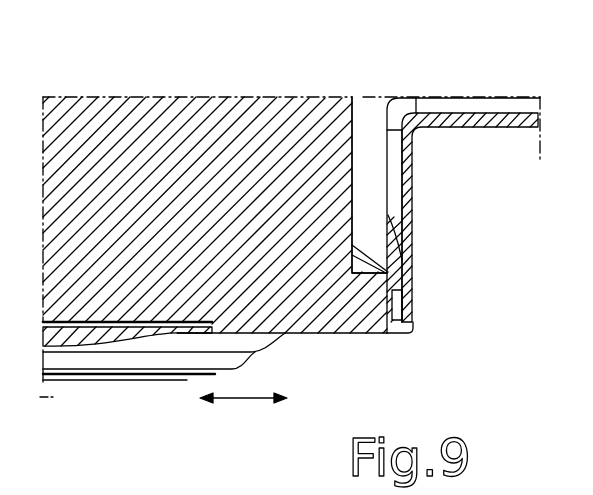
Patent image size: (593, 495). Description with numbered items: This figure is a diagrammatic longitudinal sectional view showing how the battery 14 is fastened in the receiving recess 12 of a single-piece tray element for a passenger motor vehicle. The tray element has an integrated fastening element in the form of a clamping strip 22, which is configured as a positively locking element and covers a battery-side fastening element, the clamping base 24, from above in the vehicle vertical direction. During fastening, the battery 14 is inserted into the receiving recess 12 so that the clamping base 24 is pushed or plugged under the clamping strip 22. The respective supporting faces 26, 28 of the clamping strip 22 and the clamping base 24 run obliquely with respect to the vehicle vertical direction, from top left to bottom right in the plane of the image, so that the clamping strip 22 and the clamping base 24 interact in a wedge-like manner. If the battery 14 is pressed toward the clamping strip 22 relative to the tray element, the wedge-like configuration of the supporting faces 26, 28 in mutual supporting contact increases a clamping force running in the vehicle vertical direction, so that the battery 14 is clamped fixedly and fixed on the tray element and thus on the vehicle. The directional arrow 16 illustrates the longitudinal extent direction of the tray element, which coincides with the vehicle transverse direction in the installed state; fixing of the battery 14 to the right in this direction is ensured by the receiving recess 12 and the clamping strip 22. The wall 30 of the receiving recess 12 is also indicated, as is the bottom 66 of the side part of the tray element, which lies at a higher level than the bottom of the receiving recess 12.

The receiving recess 12 is at (370, 108).
The battery 14 is at (213, 106).
The directional arrow 16 is at (245, 398).
The clamping strip 22 is at (404, 247).
The clamping base 24 is at (320, 310).
The supporting face 26 is at (388, 328).
The supporting face 28 is at (366, 250).
The wall 30 is at (470, 98).
The bottom 66 is at (493, 122).